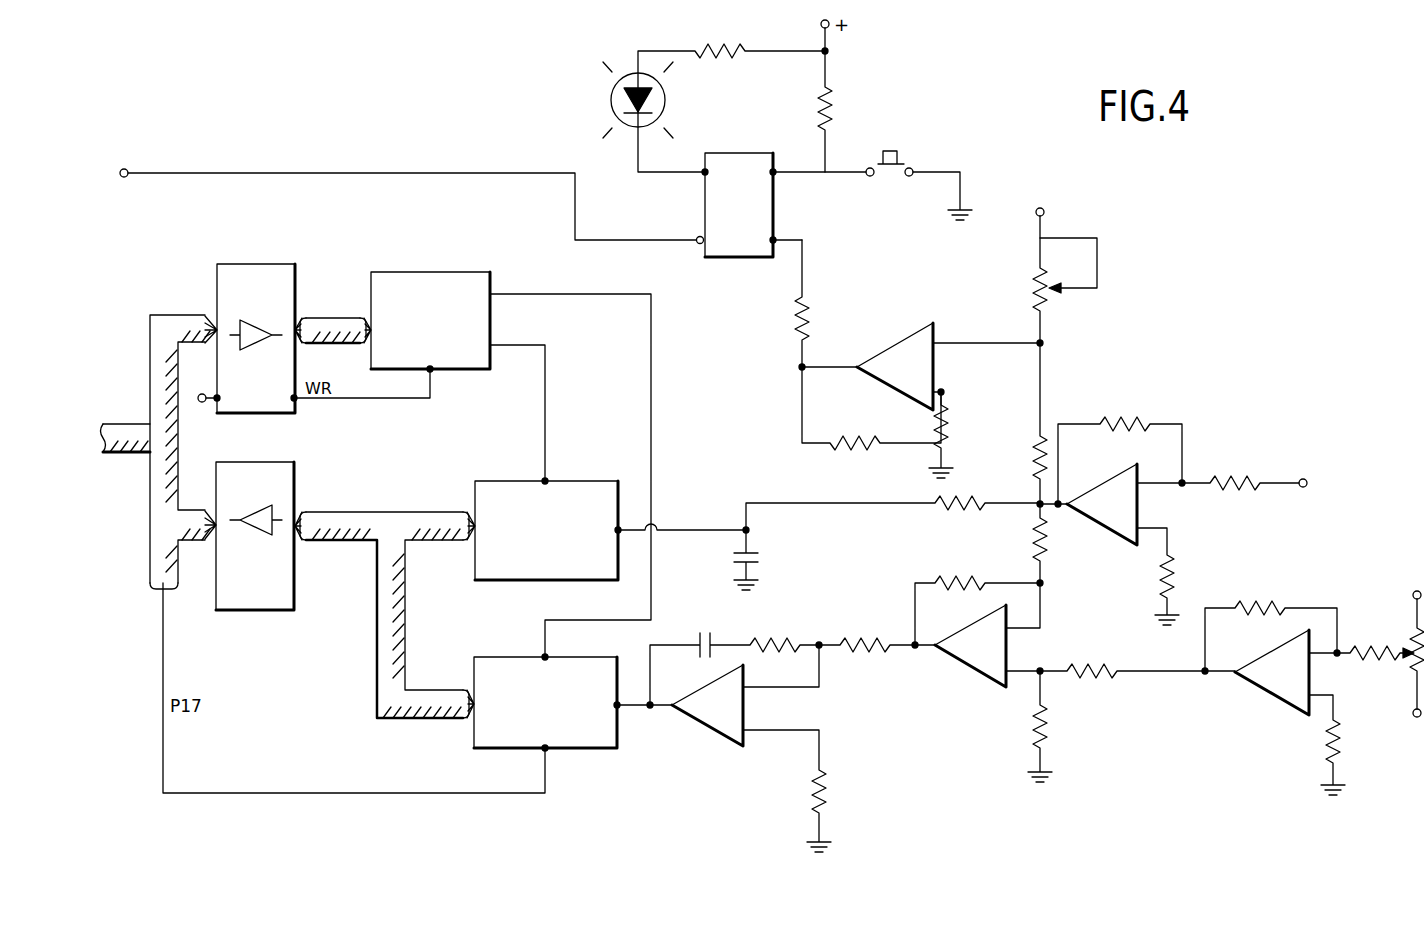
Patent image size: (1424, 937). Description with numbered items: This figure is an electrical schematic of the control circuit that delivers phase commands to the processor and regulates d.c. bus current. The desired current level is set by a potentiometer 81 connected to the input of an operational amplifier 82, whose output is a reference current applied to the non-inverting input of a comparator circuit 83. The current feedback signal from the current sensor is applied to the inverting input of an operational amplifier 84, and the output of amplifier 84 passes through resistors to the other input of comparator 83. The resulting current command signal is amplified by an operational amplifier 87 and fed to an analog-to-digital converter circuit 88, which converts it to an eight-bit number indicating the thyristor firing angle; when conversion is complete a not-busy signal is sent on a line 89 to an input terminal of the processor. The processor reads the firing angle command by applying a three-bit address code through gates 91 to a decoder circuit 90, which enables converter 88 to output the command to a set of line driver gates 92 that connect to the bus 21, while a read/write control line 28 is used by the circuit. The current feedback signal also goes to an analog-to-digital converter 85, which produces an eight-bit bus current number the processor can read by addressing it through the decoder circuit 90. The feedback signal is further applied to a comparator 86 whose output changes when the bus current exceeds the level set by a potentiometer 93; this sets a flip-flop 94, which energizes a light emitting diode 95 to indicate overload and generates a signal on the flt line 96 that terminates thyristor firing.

The bus 21 is at (113, 453).
The read/write control line 28 is at (201, 402).
The potentiometer 81 is at (1414, 636).
The operational amplifier 82 is at (1275, 700).
The comparator circuit 83 is at (975, 680).
The operational amplifier 84 is at (1105, 530).
The analog-to-digital converter 85 is at (604, 481).
The comparator 86 is at (893, 345).
The operational amplifier 87 is at (700, 727).
The analog-to-digital converter circuit 88 is at (592, 748).
The line 89 is at (497, 793).
The decoder circuit 90 is at (392, 272).
The gates 91 is at (261, 264).
The line driver gates 92 is at (293, 580).
The potentiometer 93 is at (1060, 296).
The flip-flop 94 is at (745, 216).
The light emitting diode 95 is at (612, 108).
The flt line 96 is at (127, 169).